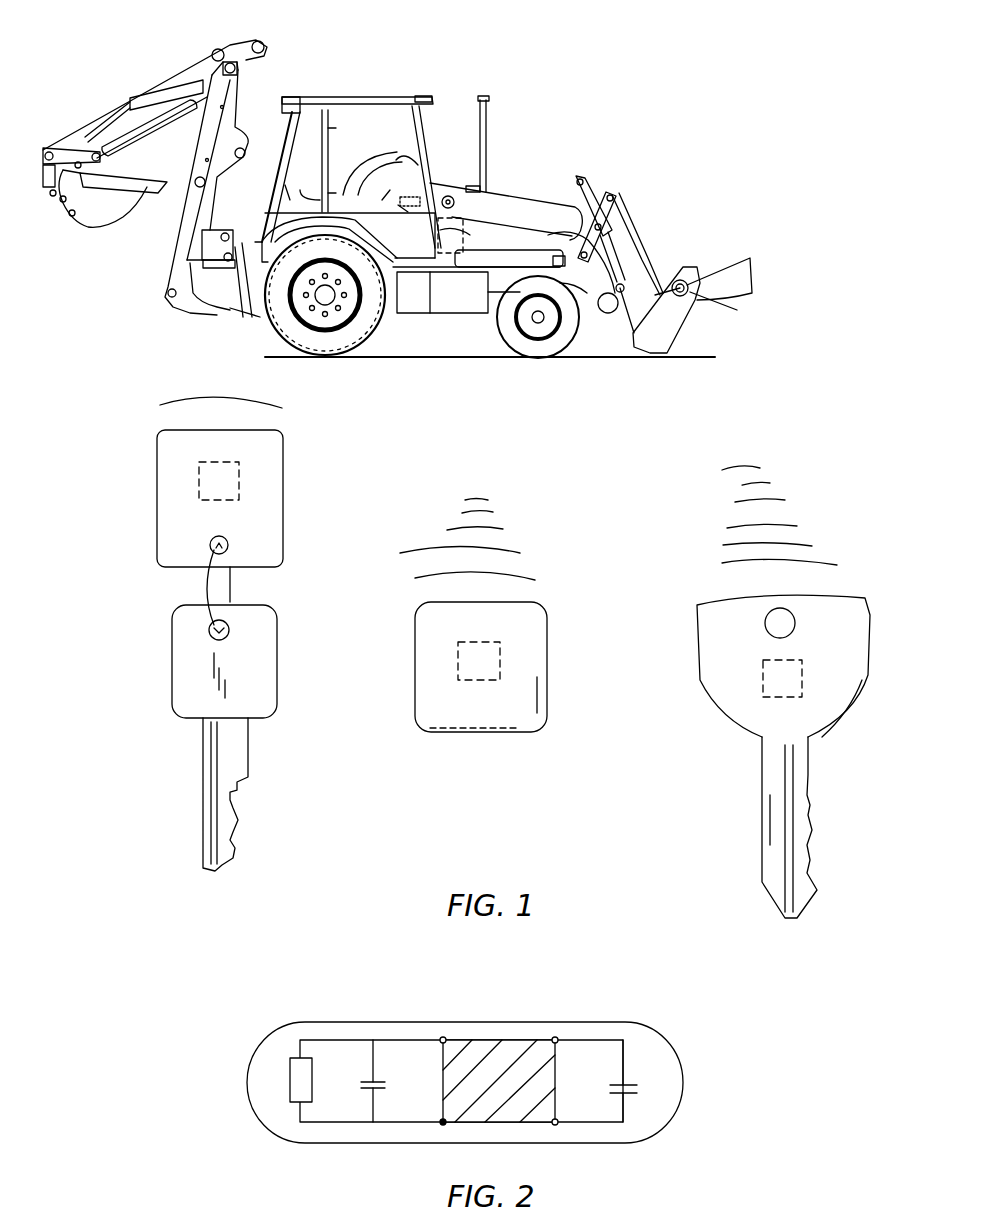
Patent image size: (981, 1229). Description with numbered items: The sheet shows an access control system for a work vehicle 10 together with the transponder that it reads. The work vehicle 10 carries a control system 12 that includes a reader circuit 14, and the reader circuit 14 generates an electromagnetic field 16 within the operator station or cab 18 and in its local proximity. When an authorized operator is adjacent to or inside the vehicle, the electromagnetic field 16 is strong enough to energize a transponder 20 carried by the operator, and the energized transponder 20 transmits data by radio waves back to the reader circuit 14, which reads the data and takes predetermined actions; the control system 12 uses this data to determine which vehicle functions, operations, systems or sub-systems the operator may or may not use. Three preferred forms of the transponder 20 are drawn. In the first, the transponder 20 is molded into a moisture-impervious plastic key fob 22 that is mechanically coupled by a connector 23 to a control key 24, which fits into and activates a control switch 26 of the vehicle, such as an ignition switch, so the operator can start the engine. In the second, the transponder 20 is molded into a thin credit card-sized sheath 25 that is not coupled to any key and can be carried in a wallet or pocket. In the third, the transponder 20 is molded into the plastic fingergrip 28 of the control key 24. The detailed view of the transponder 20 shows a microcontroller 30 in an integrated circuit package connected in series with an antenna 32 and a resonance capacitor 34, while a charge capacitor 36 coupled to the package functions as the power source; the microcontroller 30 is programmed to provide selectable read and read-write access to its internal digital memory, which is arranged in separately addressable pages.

In FIG. 1, the work vehicle 10 is at (338, 97).
In FIG. 1, the control system 12 is at (467, 234).
In FIG. 1, the reader circuit 14 is at (458, 217).
In FIG. 1, the electromagnetic field 16 is at (412, 198).
In FIG. 1, the operator station or cab 18 is at (407, 153).
In FIG. 1, the transponder 20 is at (239, 482).
In FIG. 2, the transponder 20 is at (662, 986).
In FIG. 1, the key fob 22 is at (283, 438).
In FIG. 1, the connector 23 is at (208, 583).
In FIG. 1, the control key 24 is at (277, 669).
In FIG. 1, the credit card-sized sheath 25 is at (547, 727).
In FIG. 1, the control switch 26 is at (403, 195).
In FIG. 1, the plastic fingergrip 28 is at (840, 715).
In FIG. 2, the microcontroller 30 is at (522, 1097).
In FIG. 2, the antenna 32 is at (290, 1094).
In FIG. 2, the resonance capacitor 34 is at (370, 1093).
In FIG. 2, the charge capacitor 36 is at (635, 1080).